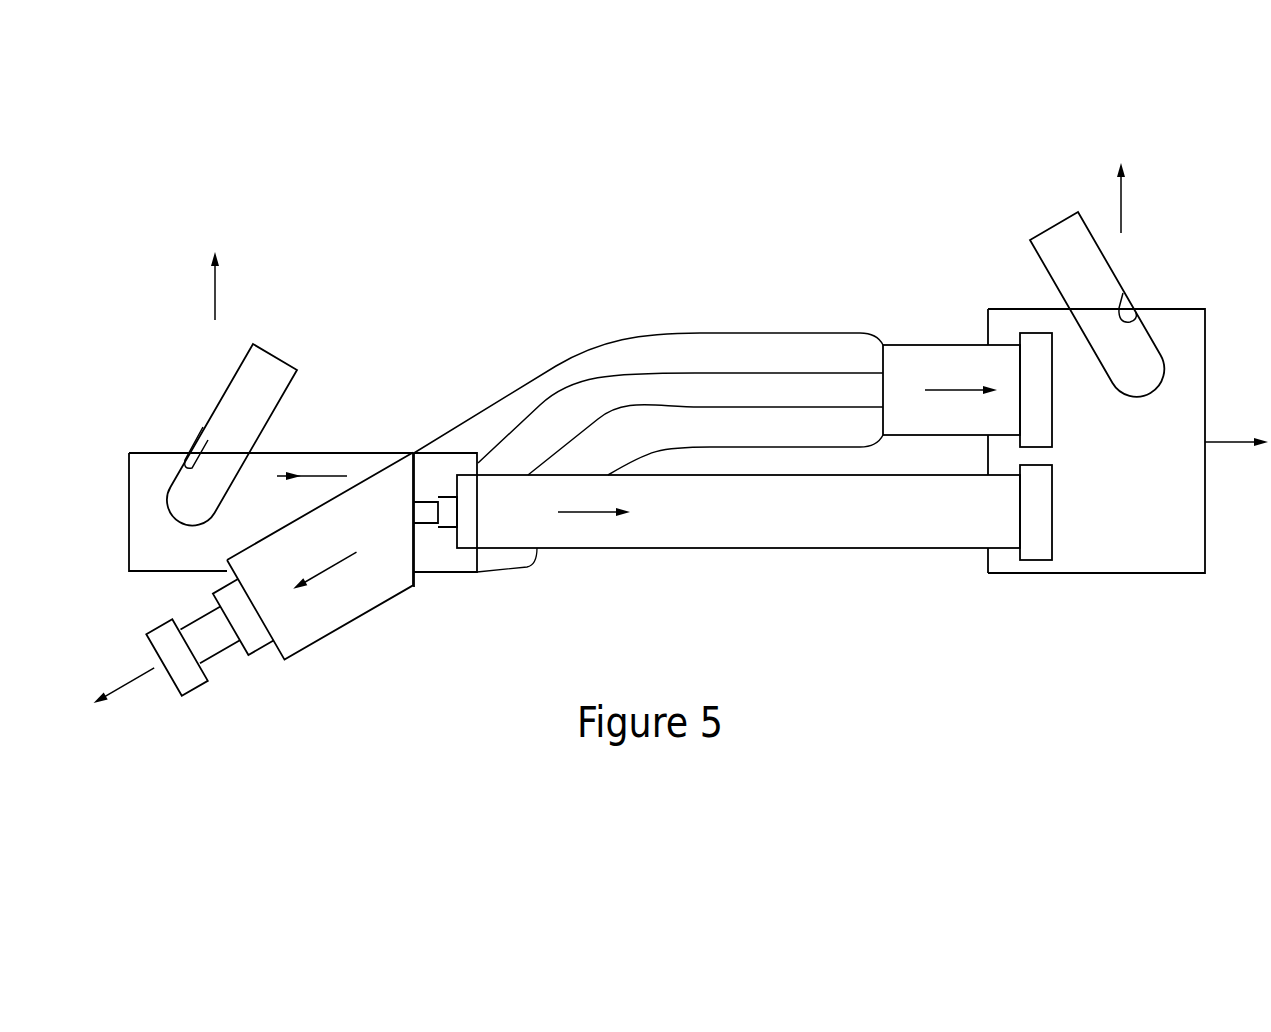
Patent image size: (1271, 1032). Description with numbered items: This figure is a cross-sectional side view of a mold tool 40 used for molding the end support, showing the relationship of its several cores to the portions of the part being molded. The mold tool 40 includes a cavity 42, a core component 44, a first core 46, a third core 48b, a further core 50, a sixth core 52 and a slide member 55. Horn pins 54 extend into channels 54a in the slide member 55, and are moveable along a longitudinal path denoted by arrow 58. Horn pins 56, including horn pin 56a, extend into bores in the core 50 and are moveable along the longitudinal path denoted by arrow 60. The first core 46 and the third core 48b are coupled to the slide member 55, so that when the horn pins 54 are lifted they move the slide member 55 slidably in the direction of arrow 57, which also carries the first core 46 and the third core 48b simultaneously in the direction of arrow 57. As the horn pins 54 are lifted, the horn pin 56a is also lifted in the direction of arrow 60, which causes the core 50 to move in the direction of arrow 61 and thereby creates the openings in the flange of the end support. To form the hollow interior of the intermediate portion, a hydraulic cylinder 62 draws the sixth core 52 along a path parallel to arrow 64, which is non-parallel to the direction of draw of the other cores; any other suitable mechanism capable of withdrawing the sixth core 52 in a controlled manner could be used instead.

The mold tool 40 is at (402, 277).
The cavity 42 is at (905, 343).
The core component 44 is at (838, 548).
The first core 46 is at (955, 365).
The third core 48b is at (903, 535).
The core 50 is at (162, 470).
The sixth core 52 is at (307, 631).
The horn pins 54 is at (1093, 273).
The channels 54a is at (1123, 295).
The slide member 55 is at (1135, 537).
The horn pins 56 is at (233, 407).
The horn pin 56a is at (201, 430).
The arrow 57 is at (1230, 443).
The arrow 58 is at (1123, 208).
The arrow 60 is at (217, 295).
The arrow 61 is at (312, 470).
The hydraulic cylinder 62 is at (190, 675).
The arrow 64 is at (133, 683).